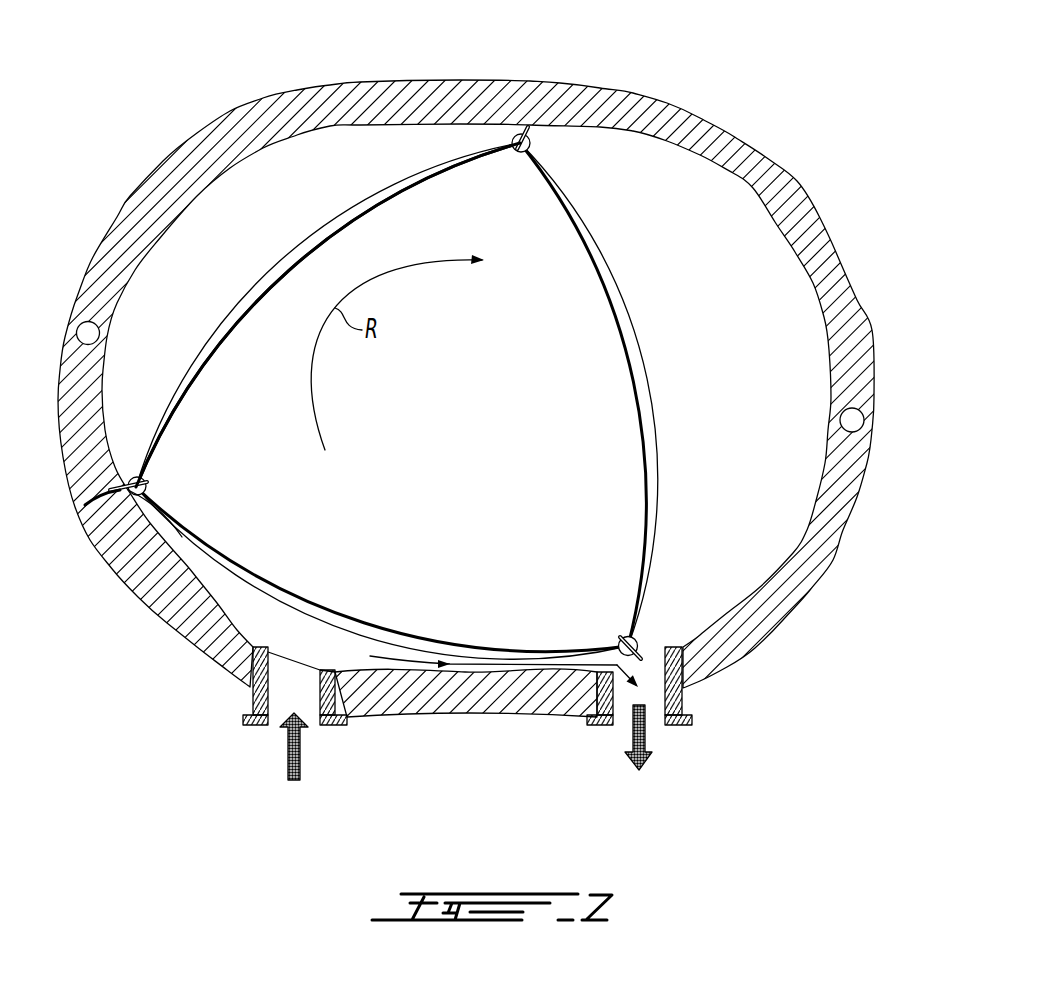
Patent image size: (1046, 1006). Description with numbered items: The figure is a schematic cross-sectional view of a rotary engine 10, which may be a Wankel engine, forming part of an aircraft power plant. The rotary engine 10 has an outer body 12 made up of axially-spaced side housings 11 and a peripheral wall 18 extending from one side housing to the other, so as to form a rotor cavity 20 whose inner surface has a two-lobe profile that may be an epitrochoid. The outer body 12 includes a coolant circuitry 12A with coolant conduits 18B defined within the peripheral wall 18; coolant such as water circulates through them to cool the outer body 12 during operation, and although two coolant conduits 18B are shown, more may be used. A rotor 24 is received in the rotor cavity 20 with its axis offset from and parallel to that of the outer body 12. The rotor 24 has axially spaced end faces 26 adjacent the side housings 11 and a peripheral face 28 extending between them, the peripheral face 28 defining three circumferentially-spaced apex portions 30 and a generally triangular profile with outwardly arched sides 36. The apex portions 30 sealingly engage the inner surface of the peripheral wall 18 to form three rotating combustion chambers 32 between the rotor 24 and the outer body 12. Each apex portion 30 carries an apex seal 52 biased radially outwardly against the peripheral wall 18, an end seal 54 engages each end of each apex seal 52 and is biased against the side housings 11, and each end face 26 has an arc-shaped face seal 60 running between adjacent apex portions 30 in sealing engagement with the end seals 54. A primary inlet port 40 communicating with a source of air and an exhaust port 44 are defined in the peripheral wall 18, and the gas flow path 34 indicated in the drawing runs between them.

The rotary engine 10 is at (97, 142).
The side housings 11 is at (681, 190).
The outer body 12 is at (797, 179).
The coolant circuitry 12A is at (920, 400).
The peripheral wall 18 is at (848, 373).
The coolant conduits 18B is at (88, 333).
The rotor cavity 20 is at (752, 475).
The rotor 24 is at (579, 188).
The end faces 26 is at (494, 187).
The peripheral face 28 is at (420, 163).
The apex portions 30 is at (652, 663).
The combustion chambers 32 is at (288, 207).
The gas flow path 34 is at (250, 592).
The outwardly arched sides 36 is at (250, 287).
The primary inlet port 40 is at (277, 712).
The exhaust port 44 is at (652, 712).
The apex seal 52 is at (110, 512).
The end seal 54 is at (118, 491).
The face seal 60 is at (182, 537).